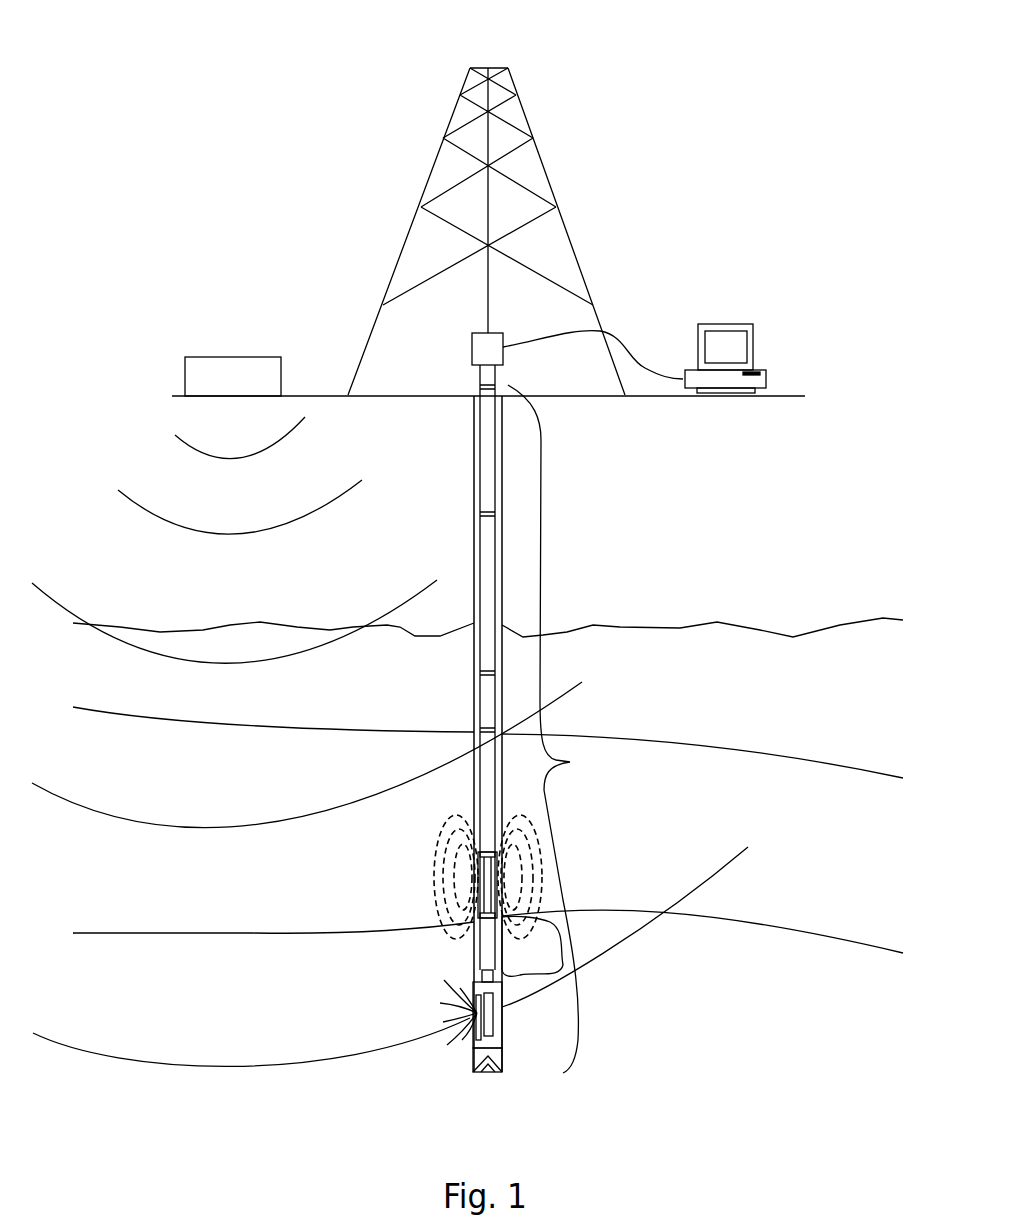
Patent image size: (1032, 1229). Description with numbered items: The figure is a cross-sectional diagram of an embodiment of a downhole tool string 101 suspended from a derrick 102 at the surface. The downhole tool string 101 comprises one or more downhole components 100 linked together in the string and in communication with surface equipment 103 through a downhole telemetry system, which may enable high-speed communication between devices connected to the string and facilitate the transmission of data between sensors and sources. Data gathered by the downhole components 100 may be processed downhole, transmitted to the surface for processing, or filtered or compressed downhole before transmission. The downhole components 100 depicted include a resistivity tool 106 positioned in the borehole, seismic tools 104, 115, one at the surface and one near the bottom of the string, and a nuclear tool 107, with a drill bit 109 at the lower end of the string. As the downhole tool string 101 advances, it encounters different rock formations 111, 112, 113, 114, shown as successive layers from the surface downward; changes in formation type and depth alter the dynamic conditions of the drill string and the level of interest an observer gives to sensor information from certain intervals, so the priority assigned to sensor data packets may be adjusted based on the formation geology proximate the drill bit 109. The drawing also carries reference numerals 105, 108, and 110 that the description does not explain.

The downhole components 100 is at (562, 1080).
The downhole tool string 101 is at (565, 729).
The derrick 102 is at (570, 228).
The surface equipment 103 is at (728, 343).
The seismic tool 104 is at (222, 357).
The seismic waves 105 is at (135, 503).
The resistivity tool 106 is at (482, 884).
The nuclear tool 107 is at (490, 967).
The formation 108 is at (565, 998).
The drill bit 109 is at (497, 1057).
The electromagnetic field lines 110 is at (552, 894).
The rock formation 111 is at (837, 543).
The rock formation 112 is at (842, 738).
The rock formation 113 is at (837, 903).
The rock formation 114 is at (839, 1074).
The seismic tool 115 is at (470, 1013).